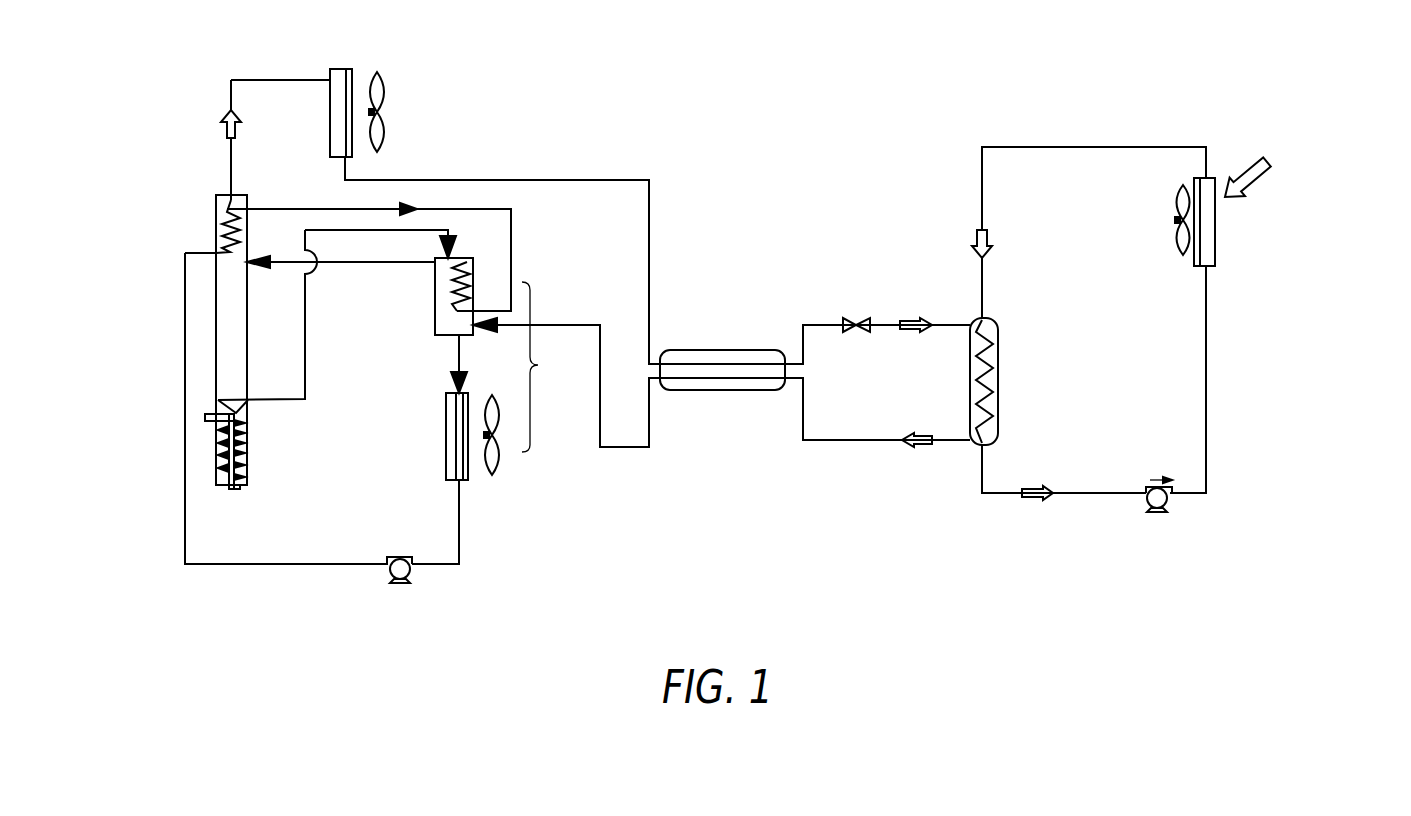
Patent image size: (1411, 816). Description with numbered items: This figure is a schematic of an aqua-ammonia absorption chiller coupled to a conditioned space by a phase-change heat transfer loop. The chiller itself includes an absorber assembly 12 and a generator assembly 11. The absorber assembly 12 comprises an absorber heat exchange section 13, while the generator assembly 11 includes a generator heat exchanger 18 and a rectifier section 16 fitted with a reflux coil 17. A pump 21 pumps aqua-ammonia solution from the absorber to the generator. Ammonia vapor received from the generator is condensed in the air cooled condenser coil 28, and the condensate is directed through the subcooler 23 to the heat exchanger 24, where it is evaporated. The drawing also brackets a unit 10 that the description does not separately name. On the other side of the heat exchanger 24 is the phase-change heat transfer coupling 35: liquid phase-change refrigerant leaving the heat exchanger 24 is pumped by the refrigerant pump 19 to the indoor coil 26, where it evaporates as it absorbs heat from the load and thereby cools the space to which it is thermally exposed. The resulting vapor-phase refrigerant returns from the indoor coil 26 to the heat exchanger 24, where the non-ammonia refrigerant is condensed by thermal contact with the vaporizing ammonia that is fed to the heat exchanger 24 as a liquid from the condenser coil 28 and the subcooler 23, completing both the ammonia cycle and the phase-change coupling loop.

The cooling unit (heat exchanger and cooler assembly) 10 is at (543, 367).
The generator assembly 11 is at (152, 343).
The absorber assembly 12 is at (468, 478).
The absorber heat exchange section 13 is at (475, 270).
The rectifier section 16 is at (216, 230).
The reflux coil 17 is at (227, 212).
The generator heat exchanger 18 is at (217, 452).
The refrigerant pump 19 is at (1175, 500).
The pump 21 is at (397, 560).
The subcooler 23 is at (700, 350).
The heat exchanger 24 is at (970, 380).
The indoor coil 26 is at (1212, 178).
The air cooled condenser coil 28 is at (345, 69).
The phase-change heat transfer coupling 35 is at (935, 178).